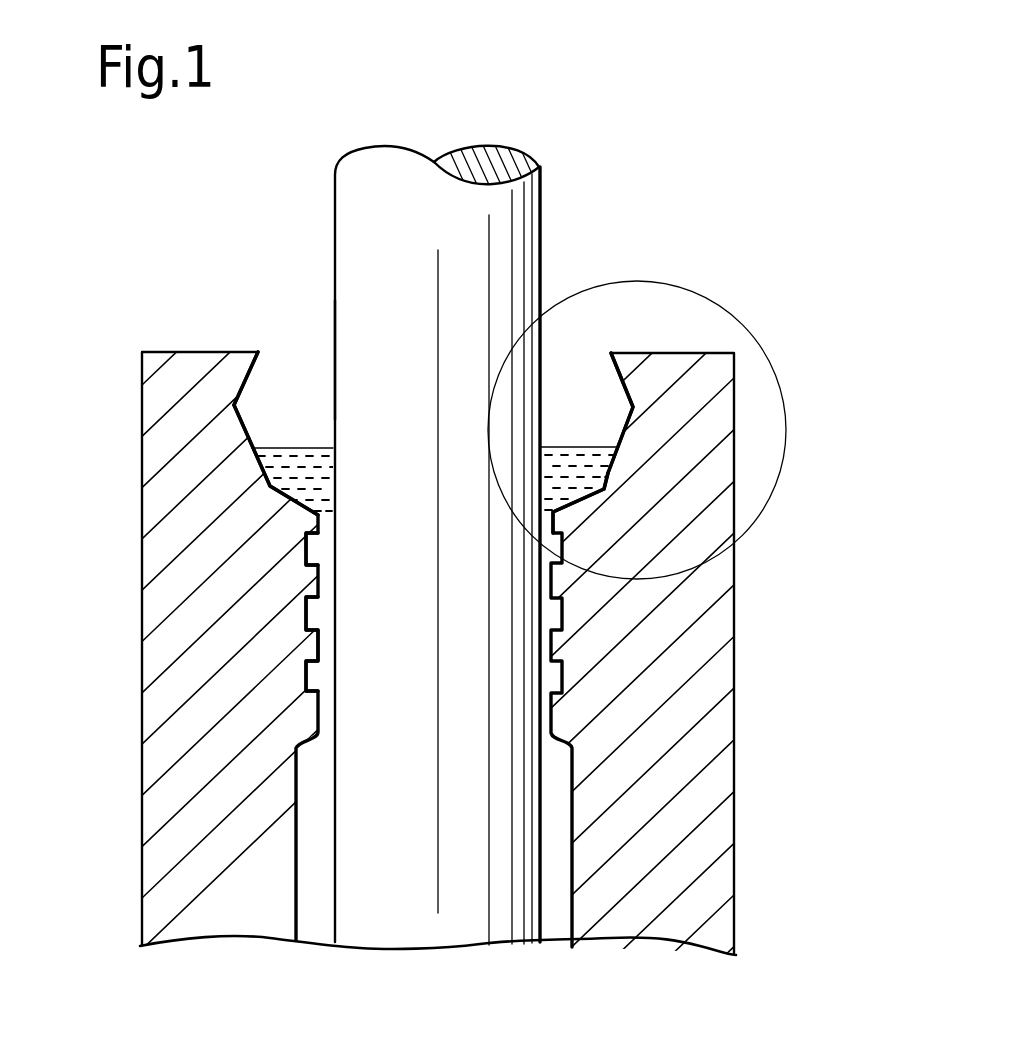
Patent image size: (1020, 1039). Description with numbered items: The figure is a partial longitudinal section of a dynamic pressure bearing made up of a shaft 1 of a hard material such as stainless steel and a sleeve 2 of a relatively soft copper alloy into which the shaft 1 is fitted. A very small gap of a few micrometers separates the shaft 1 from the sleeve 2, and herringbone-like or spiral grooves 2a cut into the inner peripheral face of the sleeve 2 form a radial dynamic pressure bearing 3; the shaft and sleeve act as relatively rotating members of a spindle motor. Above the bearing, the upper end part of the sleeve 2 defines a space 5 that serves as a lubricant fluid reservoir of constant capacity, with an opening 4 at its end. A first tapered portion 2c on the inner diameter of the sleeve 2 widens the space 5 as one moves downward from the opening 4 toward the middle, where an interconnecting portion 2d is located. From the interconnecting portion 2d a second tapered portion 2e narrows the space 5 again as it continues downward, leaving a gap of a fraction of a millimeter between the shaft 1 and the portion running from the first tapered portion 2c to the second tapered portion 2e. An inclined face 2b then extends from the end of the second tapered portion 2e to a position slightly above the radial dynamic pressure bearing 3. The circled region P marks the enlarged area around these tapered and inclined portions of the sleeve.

The shaft 1 is at (520, 218).
The sleeve 2 is at (686, 679).
The grooves 2a is at (305, 622).
The inclined face 2b is at (575, 487).
The first tapered portion 2c is at (248, 382).
The interconnecting portion 2d is at (633, 408).
The second tapered portion 2e is at (262, 486).
The radial dynamic pressure bearing 3 is at (320, 554).
The opening 4 is at (293, 360).
The space 5 is at (590, 427).
The enlarged portion P is at (762, 348).